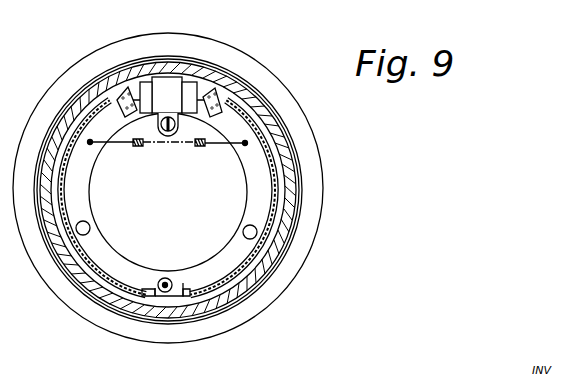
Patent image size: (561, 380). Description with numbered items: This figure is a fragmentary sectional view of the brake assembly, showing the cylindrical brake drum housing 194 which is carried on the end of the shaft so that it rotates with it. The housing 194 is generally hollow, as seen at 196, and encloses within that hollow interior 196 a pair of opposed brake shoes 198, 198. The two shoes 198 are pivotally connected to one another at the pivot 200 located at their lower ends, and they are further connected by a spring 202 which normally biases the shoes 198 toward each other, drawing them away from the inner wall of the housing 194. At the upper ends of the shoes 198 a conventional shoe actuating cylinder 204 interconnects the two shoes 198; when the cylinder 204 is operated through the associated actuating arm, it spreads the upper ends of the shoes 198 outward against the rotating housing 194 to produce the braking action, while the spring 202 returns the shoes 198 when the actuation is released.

The cylindrical brake drum housing 194 is at (277, 121).
The hollow interior of housing 196 is at (237, 99).
The brake shoes 198 is at (78, 210).
The pivotal connection 200 is at (187, 252).
The spring 202 is at (192, 147).
The shoe actuating cylinder 204 is at (170, 86).